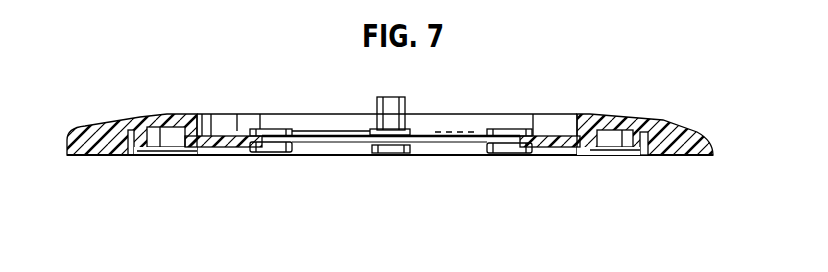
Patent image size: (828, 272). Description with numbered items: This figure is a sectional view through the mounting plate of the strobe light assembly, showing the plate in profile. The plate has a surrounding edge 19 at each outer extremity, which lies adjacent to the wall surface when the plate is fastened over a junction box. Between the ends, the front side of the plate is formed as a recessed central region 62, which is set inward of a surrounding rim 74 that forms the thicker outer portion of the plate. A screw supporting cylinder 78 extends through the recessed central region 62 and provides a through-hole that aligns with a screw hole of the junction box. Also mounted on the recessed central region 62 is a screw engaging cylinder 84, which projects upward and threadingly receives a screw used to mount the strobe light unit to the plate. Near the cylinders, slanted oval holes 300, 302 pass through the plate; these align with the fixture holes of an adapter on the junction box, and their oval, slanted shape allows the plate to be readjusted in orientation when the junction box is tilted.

The surrounding edge 19 is at (70, 156).
The recessed central region 62 is at (572, 120).
The surrounding rim 74 is at (621, 114).
The screw supporting cylinder 78 is at (410, 131).
The screw engaging cylinder 84 is at (377, 102).
The slanted oval hole 300 is at (280, 130).
The slanted oval hole 302 is at (513, 130).